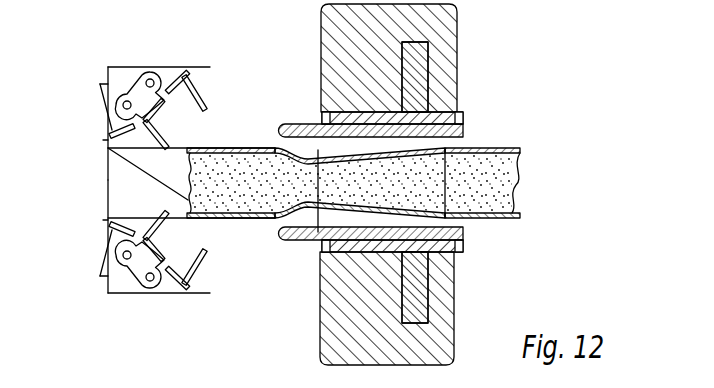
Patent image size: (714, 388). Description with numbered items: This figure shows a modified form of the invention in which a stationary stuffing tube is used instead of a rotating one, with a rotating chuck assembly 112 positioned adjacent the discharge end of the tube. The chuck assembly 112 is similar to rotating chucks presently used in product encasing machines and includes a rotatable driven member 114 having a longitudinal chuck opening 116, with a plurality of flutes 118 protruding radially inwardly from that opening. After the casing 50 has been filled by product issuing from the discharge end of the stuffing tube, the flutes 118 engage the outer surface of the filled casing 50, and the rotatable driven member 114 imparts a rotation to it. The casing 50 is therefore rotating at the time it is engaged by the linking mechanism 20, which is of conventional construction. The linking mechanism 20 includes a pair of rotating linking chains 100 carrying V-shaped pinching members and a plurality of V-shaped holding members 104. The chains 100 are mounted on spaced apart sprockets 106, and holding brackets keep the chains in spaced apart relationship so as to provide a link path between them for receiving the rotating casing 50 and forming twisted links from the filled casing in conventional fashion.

The linking mechanism 20 is at (180, 306).
The casing 50 is at (505, 222).
The linking chains 100 is at (158, 73).
The V-shaped holding members 104 is at (192, 97).
The sprockets 106 is at (121, 72).
The rotating chuck assembly 112 is at (458, 36).
The rotatable driven member 114 is at (432, 62).
The longitudinal chuck opening 116 is at (461, 112).
The flutes 118 is at (304, 221).